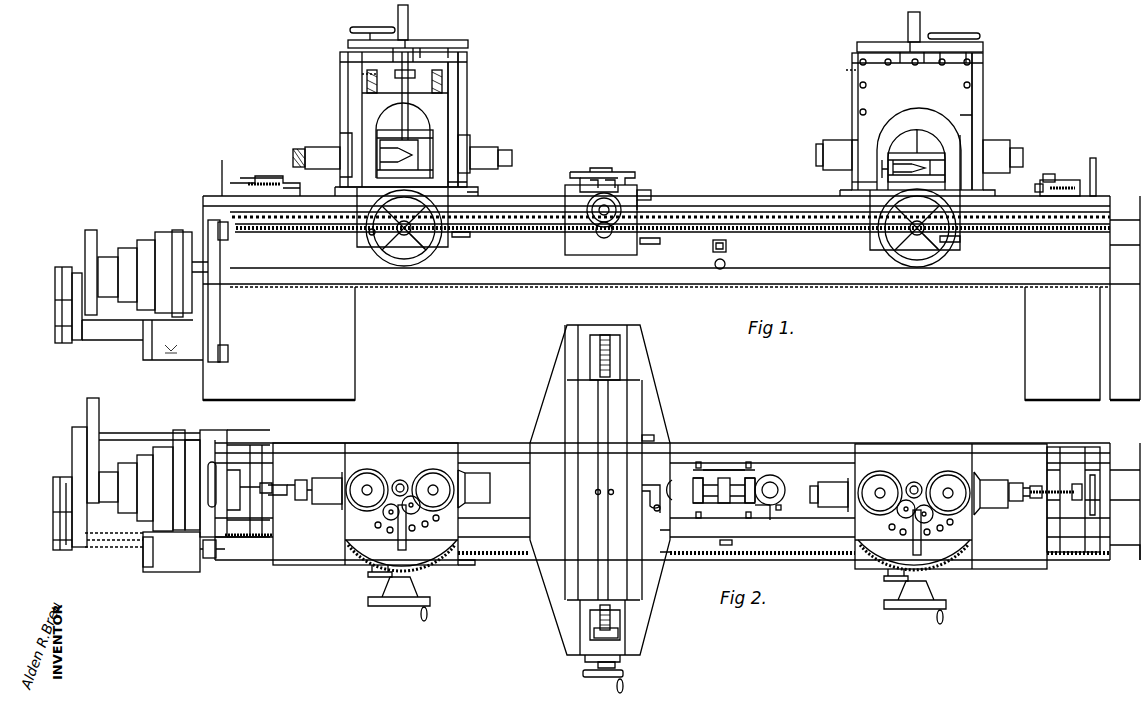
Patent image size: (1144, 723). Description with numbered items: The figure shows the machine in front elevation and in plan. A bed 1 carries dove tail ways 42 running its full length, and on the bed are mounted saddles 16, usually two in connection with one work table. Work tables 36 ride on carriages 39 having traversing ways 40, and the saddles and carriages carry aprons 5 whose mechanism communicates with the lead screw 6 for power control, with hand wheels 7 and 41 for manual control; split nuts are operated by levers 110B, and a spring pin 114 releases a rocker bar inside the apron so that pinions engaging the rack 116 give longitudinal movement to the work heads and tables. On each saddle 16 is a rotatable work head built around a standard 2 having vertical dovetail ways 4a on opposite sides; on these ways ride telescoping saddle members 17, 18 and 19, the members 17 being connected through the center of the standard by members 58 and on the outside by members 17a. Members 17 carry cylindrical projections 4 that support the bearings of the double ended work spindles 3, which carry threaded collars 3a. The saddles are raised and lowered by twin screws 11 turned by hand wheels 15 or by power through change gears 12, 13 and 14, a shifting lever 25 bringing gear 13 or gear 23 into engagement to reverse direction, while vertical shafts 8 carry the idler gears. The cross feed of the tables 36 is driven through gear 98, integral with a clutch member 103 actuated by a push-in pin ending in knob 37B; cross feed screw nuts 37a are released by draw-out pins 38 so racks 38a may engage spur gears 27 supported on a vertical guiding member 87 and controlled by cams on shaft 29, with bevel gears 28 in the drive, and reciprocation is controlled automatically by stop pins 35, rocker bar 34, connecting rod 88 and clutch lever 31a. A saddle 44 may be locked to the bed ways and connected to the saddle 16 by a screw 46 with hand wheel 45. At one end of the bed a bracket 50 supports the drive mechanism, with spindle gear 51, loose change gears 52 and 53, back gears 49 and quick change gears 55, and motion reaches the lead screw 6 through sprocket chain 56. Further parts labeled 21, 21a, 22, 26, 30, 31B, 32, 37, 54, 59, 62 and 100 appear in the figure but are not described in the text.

In FIG. 1, the bed 1 is at (862, 290).
In FIG. 2, the bed 1 is at (677, 500).
In FIG. 1, the standard 2 is at (416, 118).
In FIG. 1, the work spindle 3 is at (293, 150).
In FIG. 2, the work spindle 3 is at (300, 480).
In FIG. 1, the threaded collar 3a is at (303, 147).
In FIG. 2, the threaded collar 3a is at (310, 504).
In FIG. 1, the cylindrical projection 4 is at (490, 147).
In FIG. 2, the cylindrical projection 4 is at (834, 482).
In FIG. 1, the vertical dovetail ways 4a is at (662, 185).
In FIG. 1, the apron 5 is at (438, 252).
In FIG. 1, the lead screw 6 is at (793, 232).
In FIG. 2, the lead screw 6 is at (1114, 565).
In FIG. 1, the hand wheel 7 is at (944, 254).
In FIG. 2, the hand wheel 7 is at (915, 609).
In FIG. 1, the vertical shaft 8 is at (408, 12).
In FIG. 1, the twin screws 11 is at (377, 84).
In FIG. 1, the change gear 12 is at (348, 44).
In FIG. 1, the gear 13 is at (410, 48).
In FIG. 2, the gear 13 is at (914, 482).
In FIG. 1, the change gear 14 is at (436, 48).
In FIG. 2, the change gear 14 is at (948, 471).
In FIG. 1, the hand wheel 15 is at (355, 27).
In FIG. 2, the hand wheel 15 is at (880, 471).
In FIG. 1, the saddle 16 is at (320, 192).
In FIG. 2, the saddle 16 is at (1020, 568).
In FIG. 1, the saddle member 17 is at (450, 108).
In FIG. 1, the connecting member 17a is at (600, 65).
In FIG. 1, the saddle member 18 is at (467, 78).
In FIG. 1, the saddle member 19 is at (467, 55).
In FIG. 2, the saddle member 19 is at (410, 448).
In FIG. 1, the bearing 21 is at (835, 140).
In FIG. 1, the bearing 21a is at (1000, 140).
In FIG. 2, the change gear 22 is at (897, 516).
In FIG. 2, the gear 23 is at (933, 516).
In FIG. 1, the shifting lever 25 is at (420, 40).
In FIG. 2, the shifting lever 25 is at (921, 545).
In FIG. 2, the quadrant 26 is at (960, 555).
In FIG. 2, the spur gear 27 is at (735, 508).
In FIG. 2, the bevel gear 28 is at (782, 482).
In FIG. 1, the shaft 29 is at (726, 246).
In FIG. 2, the shaft 29 is at (732, 545).
In FIG. 2, the pins 30 is at (72, 450).
In FIG. 2, the clutch lever 31a is at (766, 512).
In FIG. 1, the stop 31B is at (735, 263).
In FIG. 2, the pin 32 is at (781, 508).
In FIG. 2, the rocker bar 34 is at (656, 516).
In FIG. 2, the stop pins 35 is at (650, 441).
In FIG. 1, the work table 36 is at (637, 170).
In FIG. 2, the work table 36 is at (568, 432).
In FIG. 1, the tailstock base 37 is at (593, 189).
In FIG. 2, the tailstock base 37 is at (626, 615).
In FIG. 1, the cross feed screw nut 37a is at (596, 170).
In FIG. 2, the knob 37B is at (615, 665).
In FIG. 2, the draw-out pins 38 is at (616, 482).
In FIG. 1, the rack 38a is at (612, 170).
In FIG. 1, the carriage 39 is at (660, 190).
In FIG. 2, the carriage 39 is at (668, 572).
In FIG. 2, the traversing ways 40 is at (636, 650).
In FIG. 1, the hand wheel 41 is at (622, 212).
In FIG. 2, the hand wheel 41 is at (590, 680).
In FIG. 1, the dove tail ways 42 is at (746, 210).
In FIG. 1, the saddle 44 is at (232, 172).
In FIG. 2, the saddle 44 is at (1082, 447).
In FIG. 1, the hand wheel 45 is at (1101, 177).
In FIG. 1, the screw 46 is at (1049, 174).
In FIG. 2, the screw 46 is at (1062, 498).
In FIG. 1, the back gears 49 is at (91, 230).
In FIG. 2, the back gears 49 is at (93, 398).
In FIG. 1, the bracket 50 is at (80, 262).
In FIG. 2, the bracket 50 is at (185, 483).
In FIG. 1, the spindle gear 51 is at (55, 270).
In FIG. 2, the spindle gear 51 is at (53, 488).
In FIG. 1, the change gear 52 is at (55, 298).
In FIG. 2, the change gear 52 is at (53, 512).
In FIG. 1, the change gear 53 is at (55, 332).
In FIG. 2, the change gear 53 is at (53, 540).
In FIG. 2, the base 54 is at (115, 547).
In FIG. 2, the quick change gears 55 is at (160, 572).
In FIG. 1, the sprocket chain 56 is at (220, 292).
In FIG. 2, the sprocket chain 56 is at (208, 558).
In FIG. 1, the connecting member 58 is at (433, 136).
In FIG. 1, the chuck 59 is at (930, 132).
In FIG. 1, the chuck jaw 62 is at (908, 166).
In FIG. 2, the vertical guiding member 87 is at (712, 508).
In FIG. 2, the connecting rod 88 is at (778, 500).
In FIG. 2, the gear 98 is at (590, 641).
In FIG. 1, the hub 100 is at (612, 230).
In FIG. 2, the clutch member 103 is at (598, 628).
In FIG. 1, the lever 110B is at (721, 243).
In FIG. 2, the lever 110B is at (470, 565).
In FIG. 1, the spring pin 114 is at (656, 219).
In FIG. 2, the spring pin 114 is at (365, 575).
In FIG. 1, the rack 116 is at (818, 236).
In FIG. 2, the rack 116 is at (667, 544).